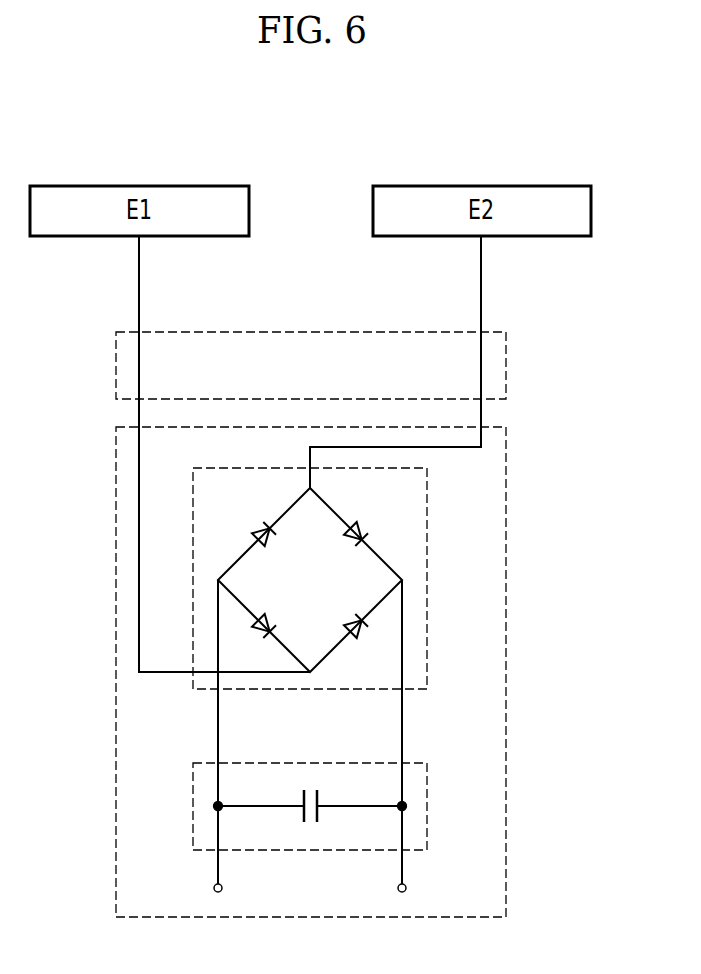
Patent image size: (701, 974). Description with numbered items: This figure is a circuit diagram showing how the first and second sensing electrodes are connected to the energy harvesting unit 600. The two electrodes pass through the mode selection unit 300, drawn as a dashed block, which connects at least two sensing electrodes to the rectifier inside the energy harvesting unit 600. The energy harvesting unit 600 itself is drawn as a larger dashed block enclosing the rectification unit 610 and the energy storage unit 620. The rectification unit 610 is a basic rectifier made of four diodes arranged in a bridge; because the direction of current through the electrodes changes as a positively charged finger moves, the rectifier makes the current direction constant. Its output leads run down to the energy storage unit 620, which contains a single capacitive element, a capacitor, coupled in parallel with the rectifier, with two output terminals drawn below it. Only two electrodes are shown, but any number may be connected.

The mode selection unit 300 is at (506, 362).
The energy harvesting unit 600 is at (506, 857).
The rectification unit 610 is at (427, 557).
The energy storage unit 620 is at (427, 792).